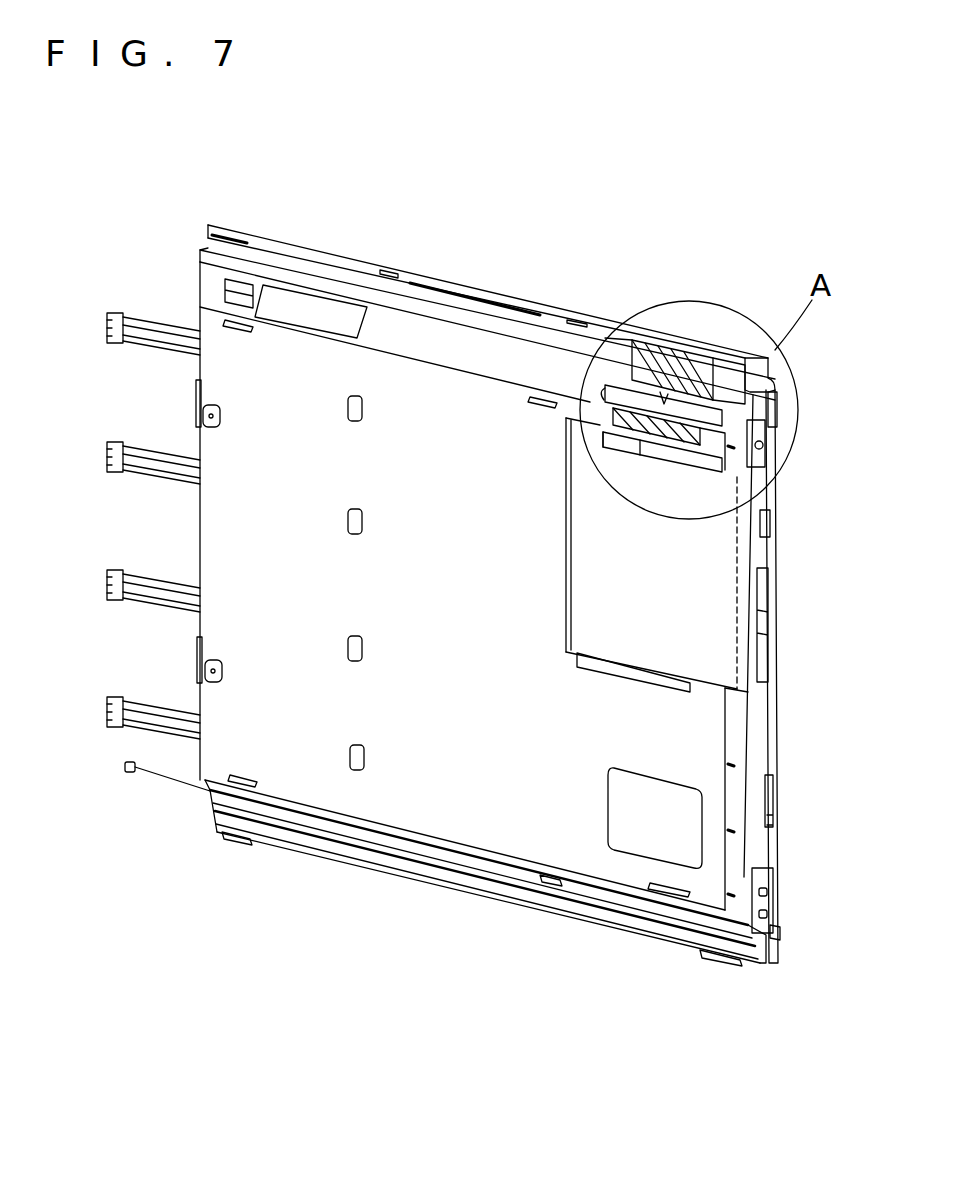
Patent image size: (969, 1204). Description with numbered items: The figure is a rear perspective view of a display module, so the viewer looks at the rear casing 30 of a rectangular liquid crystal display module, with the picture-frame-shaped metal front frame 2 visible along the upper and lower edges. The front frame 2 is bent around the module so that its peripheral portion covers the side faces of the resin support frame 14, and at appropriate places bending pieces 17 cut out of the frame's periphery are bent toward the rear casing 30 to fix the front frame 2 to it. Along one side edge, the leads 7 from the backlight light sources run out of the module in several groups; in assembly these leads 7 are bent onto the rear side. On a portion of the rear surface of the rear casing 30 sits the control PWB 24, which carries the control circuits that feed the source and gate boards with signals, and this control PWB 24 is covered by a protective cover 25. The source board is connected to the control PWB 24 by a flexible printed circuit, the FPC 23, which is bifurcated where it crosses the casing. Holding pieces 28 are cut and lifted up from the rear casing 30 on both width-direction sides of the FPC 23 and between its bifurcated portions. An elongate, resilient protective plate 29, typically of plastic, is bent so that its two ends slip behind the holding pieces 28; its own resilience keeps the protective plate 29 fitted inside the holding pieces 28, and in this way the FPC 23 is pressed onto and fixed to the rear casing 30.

The front frame 2 is at (435, 283).
The leads 7 is at (160, 455).
The support frame 14 is at (778, 905).
The bending pieces 17 is at (390, 275).
The FPC (flexible printed circuit) 23 is at (641, 343).
The control PWB 24 is at (735, 470).
The protective cover 25 is at (590, 602).
The holding pieces 28 is at (610, 382).
The protective plate 29 is at (697, 398).
The rear casing 30 is at (495, 830).